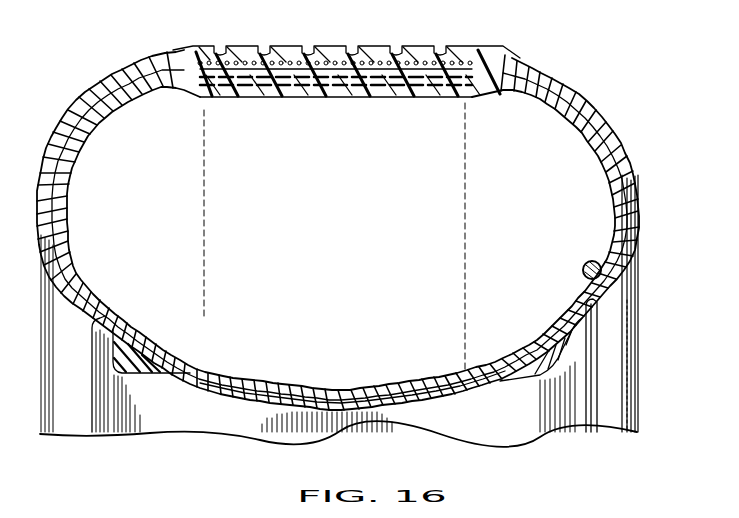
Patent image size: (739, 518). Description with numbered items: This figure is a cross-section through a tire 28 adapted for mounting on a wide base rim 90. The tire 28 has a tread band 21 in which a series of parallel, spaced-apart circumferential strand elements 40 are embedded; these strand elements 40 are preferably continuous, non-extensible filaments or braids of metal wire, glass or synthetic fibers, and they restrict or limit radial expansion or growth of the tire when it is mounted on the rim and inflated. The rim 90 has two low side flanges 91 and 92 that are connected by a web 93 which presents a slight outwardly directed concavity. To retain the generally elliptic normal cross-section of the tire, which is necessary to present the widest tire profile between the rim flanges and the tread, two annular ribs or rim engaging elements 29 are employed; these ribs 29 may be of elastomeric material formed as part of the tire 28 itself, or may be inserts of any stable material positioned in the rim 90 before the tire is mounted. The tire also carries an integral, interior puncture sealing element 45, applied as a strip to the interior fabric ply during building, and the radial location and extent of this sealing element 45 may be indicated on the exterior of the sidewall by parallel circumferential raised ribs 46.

The tread band 21 is at (466, 50).
The strand elements 40 is at (282, 63).
The tire 28 is at (50, 124).
The web 93 is at (273, 382).
The low side flange 91 is at (107, 318).
The annular ribs 29 is at (156, 342).
The low side flange 92 is at (560, 318).
The puncture sealing element 45 is at (583, 268).
The raised ribs 46 is at (595, 417).
The rim 90 is at (150, 439).